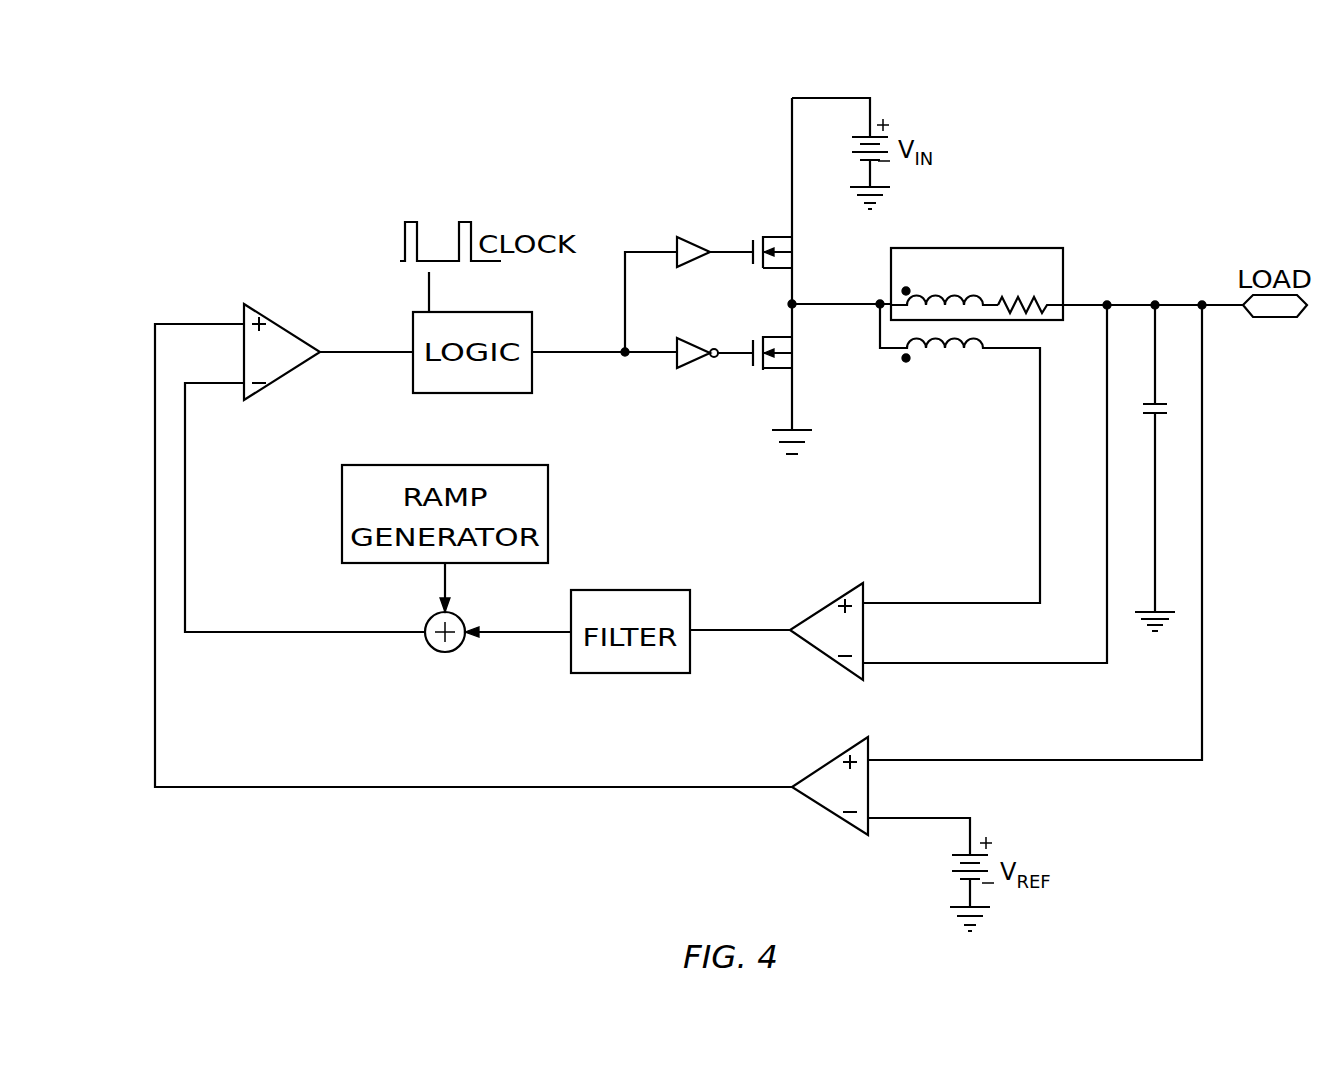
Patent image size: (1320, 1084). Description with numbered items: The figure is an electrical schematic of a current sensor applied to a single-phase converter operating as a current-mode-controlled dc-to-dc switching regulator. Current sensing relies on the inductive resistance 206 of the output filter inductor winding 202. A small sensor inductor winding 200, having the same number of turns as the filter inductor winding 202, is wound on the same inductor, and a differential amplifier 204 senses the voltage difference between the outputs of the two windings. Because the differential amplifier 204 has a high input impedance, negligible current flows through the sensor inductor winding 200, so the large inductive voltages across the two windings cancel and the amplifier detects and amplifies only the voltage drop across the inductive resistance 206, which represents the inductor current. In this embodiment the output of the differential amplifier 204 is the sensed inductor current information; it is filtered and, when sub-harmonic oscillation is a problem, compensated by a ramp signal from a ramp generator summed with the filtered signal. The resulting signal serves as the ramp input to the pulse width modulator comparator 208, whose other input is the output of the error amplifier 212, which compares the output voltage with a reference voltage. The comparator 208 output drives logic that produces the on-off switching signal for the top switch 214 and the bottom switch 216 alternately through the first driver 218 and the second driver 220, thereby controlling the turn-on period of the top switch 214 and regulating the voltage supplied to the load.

The sensor inductor winding 200 is at (935, 352).
The output filter inductor winding 202 is at (930, 292).
The differential amplifier 204 is at (808, 617).
The inductive resistance R_L 206 is at (1045, 305).
The PWM comparator 208 is at (286, 324).
The error amplifier 212 is at (818, 765).
The switch Q1 214 is at (787, 241).
The switch Q2 216 is at (787, 348).
The driver D1 218 is at (690, 240).
The driver D2 220 is at (696, 340).